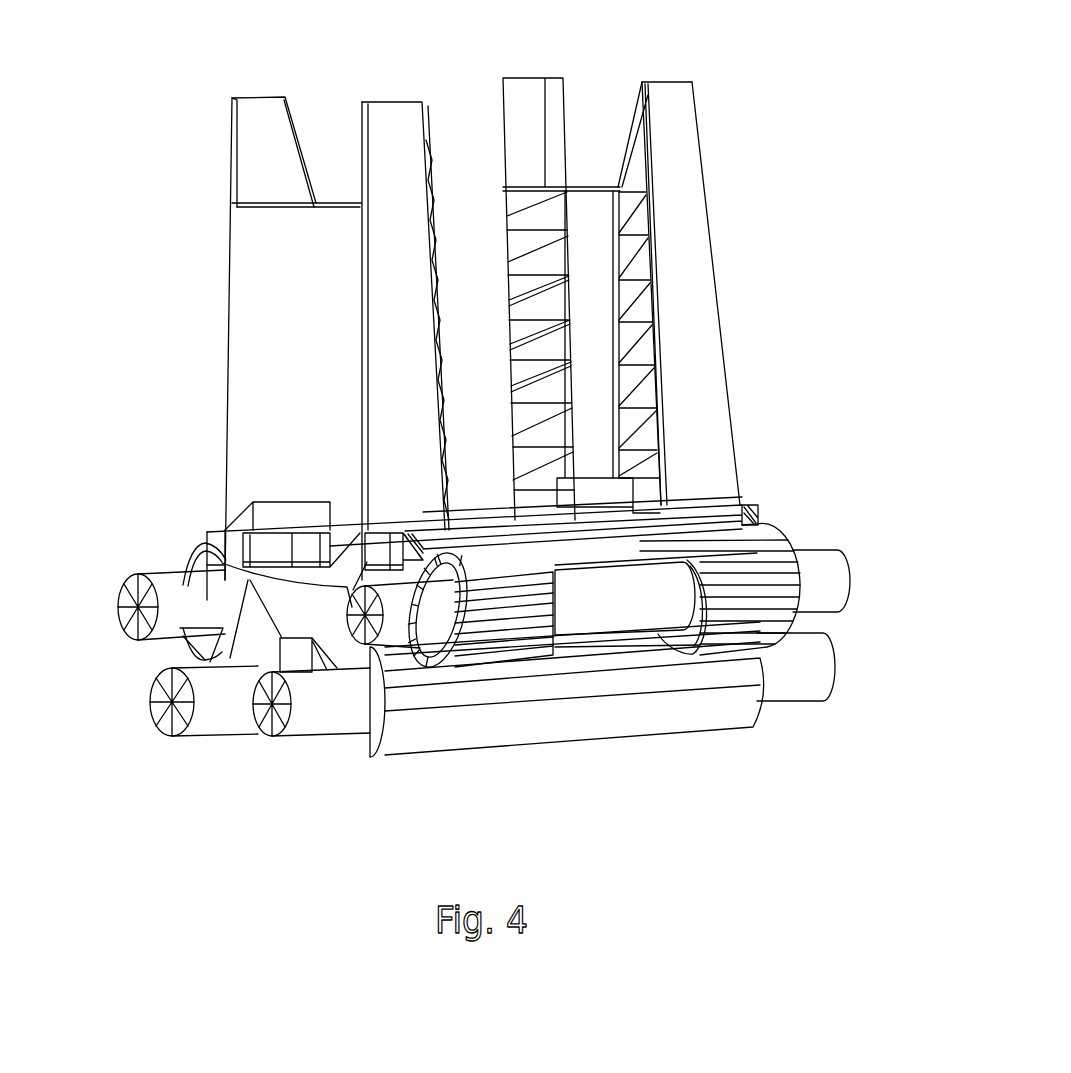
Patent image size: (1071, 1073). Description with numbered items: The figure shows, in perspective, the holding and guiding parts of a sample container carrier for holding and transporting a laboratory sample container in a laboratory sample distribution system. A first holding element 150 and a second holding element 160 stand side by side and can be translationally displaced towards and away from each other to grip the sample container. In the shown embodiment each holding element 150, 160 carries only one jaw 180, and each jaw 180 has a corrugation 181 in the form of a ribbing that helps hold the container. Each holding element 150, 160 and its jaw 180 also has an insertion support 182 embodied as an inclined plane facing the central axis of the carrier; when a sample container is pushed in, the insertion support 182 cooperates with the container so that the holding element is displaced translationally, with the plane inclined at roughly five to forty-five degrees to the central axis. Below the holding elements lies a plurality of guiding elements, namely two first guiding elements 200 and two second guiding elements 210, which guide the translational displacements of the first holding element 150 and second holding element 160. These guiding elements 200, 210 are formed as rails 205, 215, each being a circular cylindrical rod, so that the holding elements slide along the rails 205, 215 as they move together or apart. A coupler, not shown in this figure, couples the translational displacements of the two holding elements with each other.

The first holding element 150 is at (228, 345).
The second holding element 160 is at (715, 287).
The jaw 180 is at (232, 164).
The corrugation 181 is at (500, 233).
The insertion support 182 is at (645, 163).
The first guiding element 200 is at (250, 735).
The rail 205 is at (290, 740).
The second guiding element 210 is at (127, 613).
The rail 215 is at (197, 555).